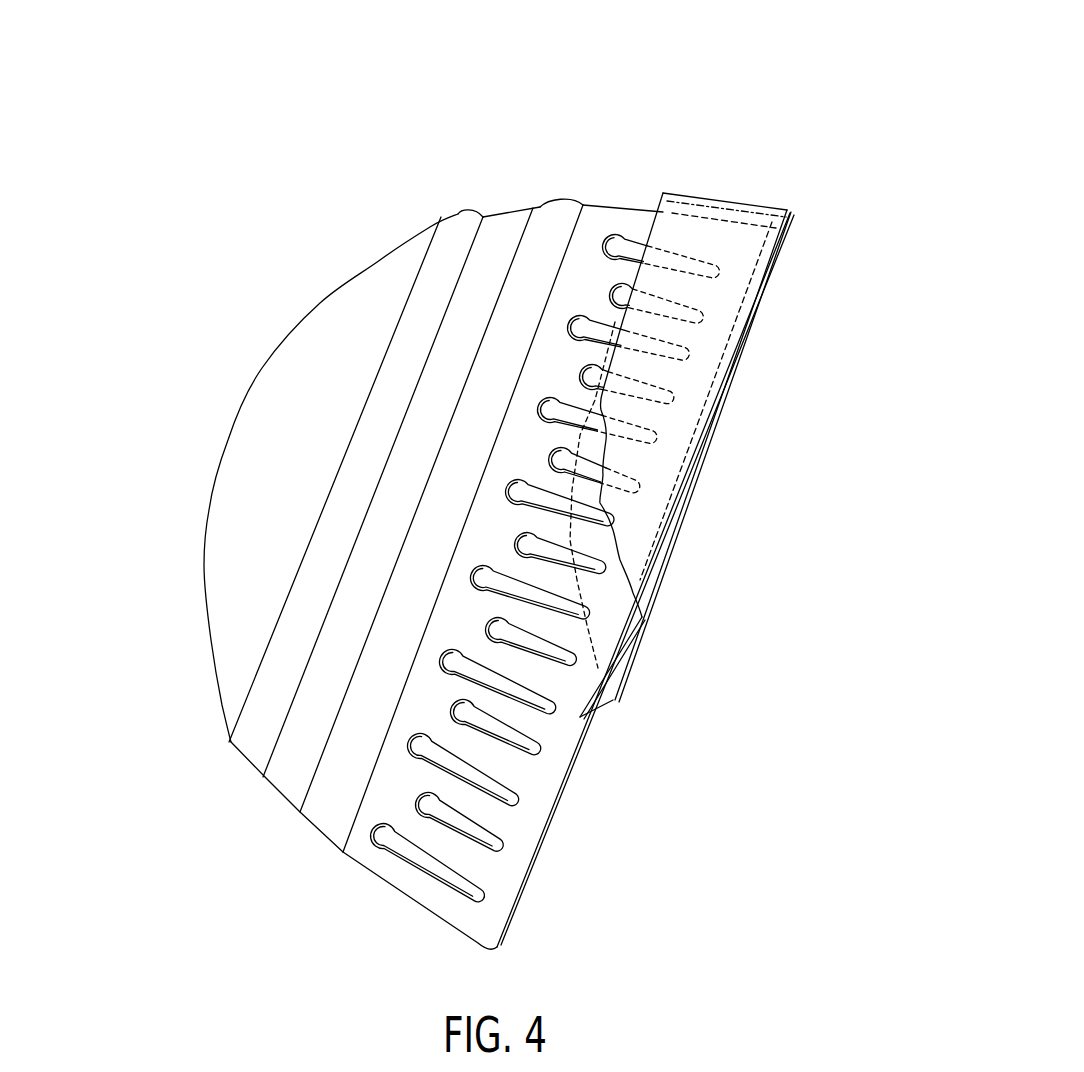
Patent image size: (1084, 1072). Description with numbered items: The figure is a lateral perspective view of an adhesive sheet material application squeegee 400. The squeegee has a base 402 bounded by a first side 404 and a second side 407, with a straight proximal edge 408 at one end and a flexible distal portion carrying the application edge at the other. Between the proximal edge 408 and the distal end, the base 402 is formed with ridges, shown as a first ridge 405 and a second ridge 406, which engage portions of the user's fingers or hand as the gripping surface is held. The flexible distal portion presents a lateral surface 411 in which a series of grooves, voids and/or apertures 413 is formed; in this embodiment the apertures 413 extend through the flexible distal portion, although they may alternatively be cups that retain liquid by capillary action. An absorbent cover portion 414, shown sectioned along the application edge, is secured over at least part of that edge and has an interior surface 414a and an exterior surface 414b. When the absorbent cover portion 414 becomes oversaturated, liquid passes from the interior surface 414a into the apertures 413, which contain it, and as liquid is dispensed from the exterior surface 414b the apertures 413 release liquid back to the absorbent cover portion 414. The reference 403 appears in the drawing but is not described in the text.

The adhesive sheet material application squeegee 400 is at (672, 92).
The base 402 is at (228, 746).
The bottom edge 403 is at (332, 857).
The first side 404 is at (560, 146).
The ridge 405 is at (468, 208).
The ridge 406 is at (570, 200).
The second side 407 is at (200, 797).
The proximal edge 408 is at (270, 387).
The lateral surface 411 is at (525, 458).
The apertures 413 is at (482, 578).
The absorbent cover portion 414 is at (787, 210).
The interior surface 414a is at (622, 640).
The exterior surface 414b is at (705, 311).